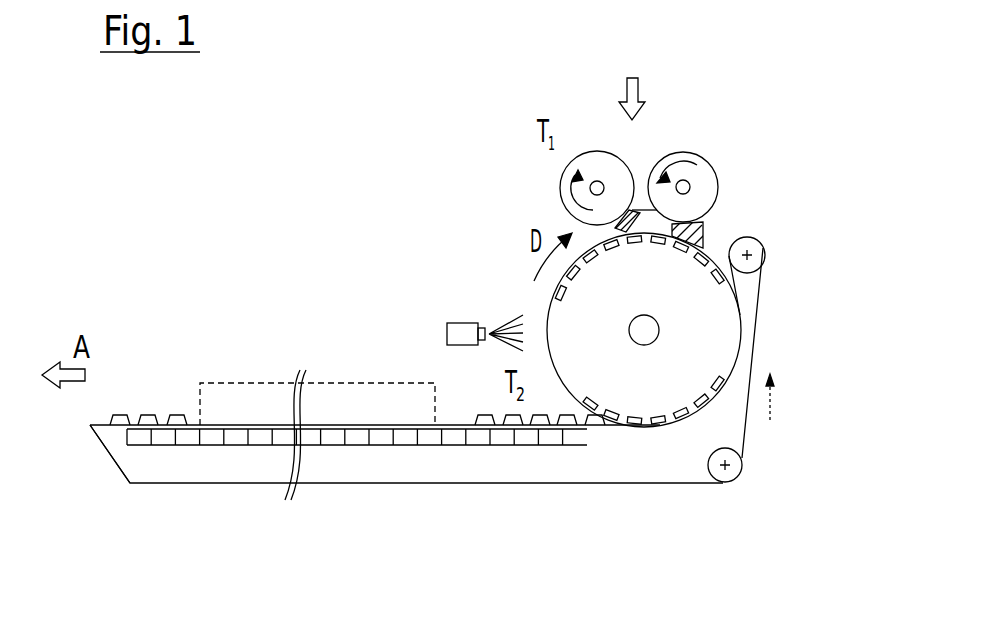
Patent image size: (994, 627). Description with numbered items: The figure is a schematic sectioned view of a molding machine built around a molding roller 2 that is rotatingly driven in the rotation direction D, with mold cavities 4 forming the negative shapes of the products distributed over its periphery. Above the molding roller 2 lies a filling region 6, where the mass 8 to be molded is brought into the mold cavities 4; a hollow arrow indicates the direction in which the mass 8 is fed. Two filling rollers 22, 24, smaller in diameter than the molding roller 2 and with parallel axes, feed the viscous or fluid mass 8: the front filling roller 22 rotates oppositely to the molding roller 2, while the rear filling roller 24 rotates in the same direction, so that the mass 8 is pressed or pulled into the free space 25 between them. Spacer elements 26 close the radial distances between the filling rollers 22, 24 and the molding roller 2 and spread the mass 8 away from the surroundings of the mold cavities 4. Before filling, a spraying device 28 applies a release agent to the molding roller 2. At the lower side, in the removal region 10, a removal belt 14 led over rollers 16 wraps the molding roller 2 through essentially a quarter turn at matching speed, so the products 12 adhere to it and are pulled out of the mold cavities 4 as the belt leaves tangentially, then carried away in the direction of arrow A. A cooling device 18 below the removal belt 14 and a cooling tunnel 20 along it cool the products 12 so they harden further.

The molding roller 2 is at (717, 363).
The mold cavities 4 is at (550, 297).
The filling region 6 is at (747, 145).
The mass 8 is at (642, 82).
The removal region 10 is at (610, 436).
The molded products 12 is at (485, 413).
The removal belt 14 is at (758, 300).
The rollers 16 is at (747, 255).
The cooling device 18 is at (527, 438).
The cooling tunnel 20 is at (342, 382).
The filling roller 22 is at (705, 183).
The filling roller 24 is at (615, 150).
The free space 25 is at (642, 173).
The spacer elements 26 is at (573, 232).
The spraying device 28 is at (462, 323).